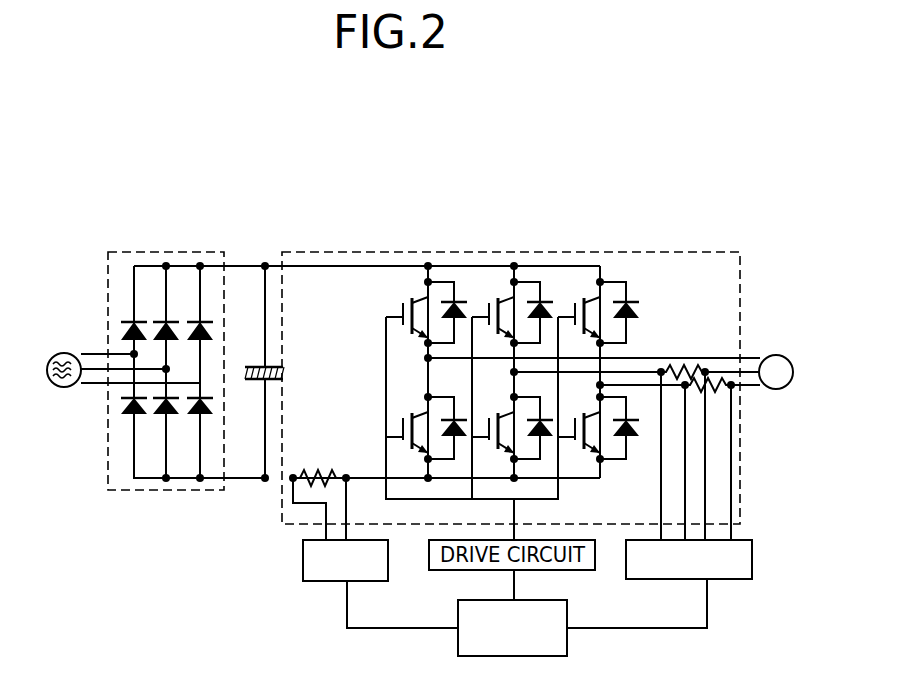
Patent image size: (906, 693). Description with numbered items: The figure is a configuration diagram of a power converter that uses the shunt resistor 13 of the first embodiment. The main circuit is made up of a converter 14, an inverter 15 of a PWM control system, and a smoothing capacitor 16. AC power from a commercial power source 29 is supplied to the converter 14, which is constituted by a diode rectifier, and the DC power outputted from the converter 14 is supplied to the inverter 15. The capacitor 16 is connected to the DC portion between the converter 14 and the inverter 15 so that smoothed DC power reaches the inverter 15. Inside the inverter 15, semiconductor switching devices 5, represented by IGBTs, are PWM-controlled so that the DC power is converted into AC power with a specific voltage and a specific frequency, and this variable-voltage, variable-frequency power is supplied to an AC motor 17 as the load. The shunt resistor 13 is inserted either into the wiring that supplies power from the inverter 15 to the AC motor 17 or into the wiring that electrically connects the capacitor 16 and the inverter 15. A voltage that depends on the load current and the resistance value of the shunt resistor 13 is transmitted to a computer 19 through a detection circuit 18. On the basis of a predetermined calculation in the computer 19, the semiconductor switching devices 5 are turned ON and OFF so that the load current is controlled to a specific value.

The semiconductor switching device 5 is at (613, 288).
The shunt resistor 13 is at (301, 466).
The converter 14 is at (160, 252).
The inverter 15 is at (512, 353).
The smoothing capacitor 16 is at (247, 364).
The AC motor 17 is at (773, 355).
The detection circuit 18 is at (303, 555).
The computer 19 is at (458, 648).
The commercial power source 29 is at (66, 352).